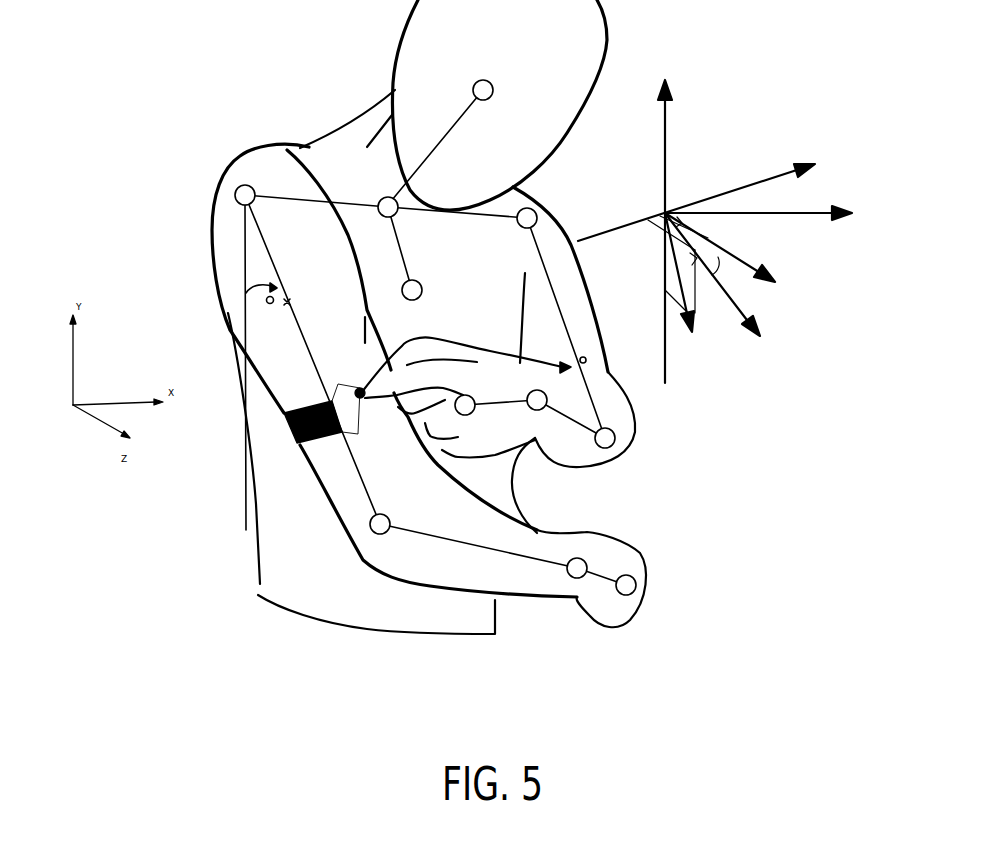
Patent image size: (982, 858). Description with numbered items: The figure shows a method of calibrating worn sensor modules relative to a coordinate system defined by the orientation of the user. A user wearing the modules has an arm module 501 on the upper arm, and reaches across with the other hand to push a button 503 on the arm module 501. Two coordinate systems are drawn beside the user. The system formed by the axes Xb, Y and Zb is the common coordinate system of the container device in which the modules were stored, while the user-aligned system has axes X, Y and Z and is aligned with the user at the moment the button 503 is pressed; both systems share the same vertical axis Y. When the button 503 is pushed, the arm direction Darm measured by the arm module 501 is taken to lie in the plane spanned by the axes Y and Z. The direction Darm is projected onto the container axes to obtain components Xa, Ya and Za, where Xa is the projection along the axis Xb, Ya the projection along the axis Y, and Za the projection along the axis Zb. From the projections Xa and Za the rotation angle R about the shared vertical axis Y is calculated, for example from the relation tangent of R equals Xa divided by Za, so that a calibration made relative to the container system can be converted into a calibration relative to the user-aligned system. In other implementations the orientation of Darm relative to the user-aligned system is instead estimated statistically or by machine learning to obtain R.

The arm module 501 is at (345, 387).
The button 503 is at (361, 400).
The X axis of the user-aligned coordinate system X is at (758, 235).
The Y axis of the user-aligned coordinate system Y is at (689, 224).
The Z axis of the user-aligned coordinate system Z is at (721, 284).
The Xb axis of the container coordinate system Xb is at (707, 198).
The Zb axis of the container coordinate system Zb is at (738, 259).
The Xa component of the arm direction Xa is at (657, 210).
The Ya component of the arm direction Ya is at (660, 256).
The Za component of the arm direction Za is at (705, 228).
The arm direction Darm is at (701, 287).
The rotation angle R is at (727, 277).